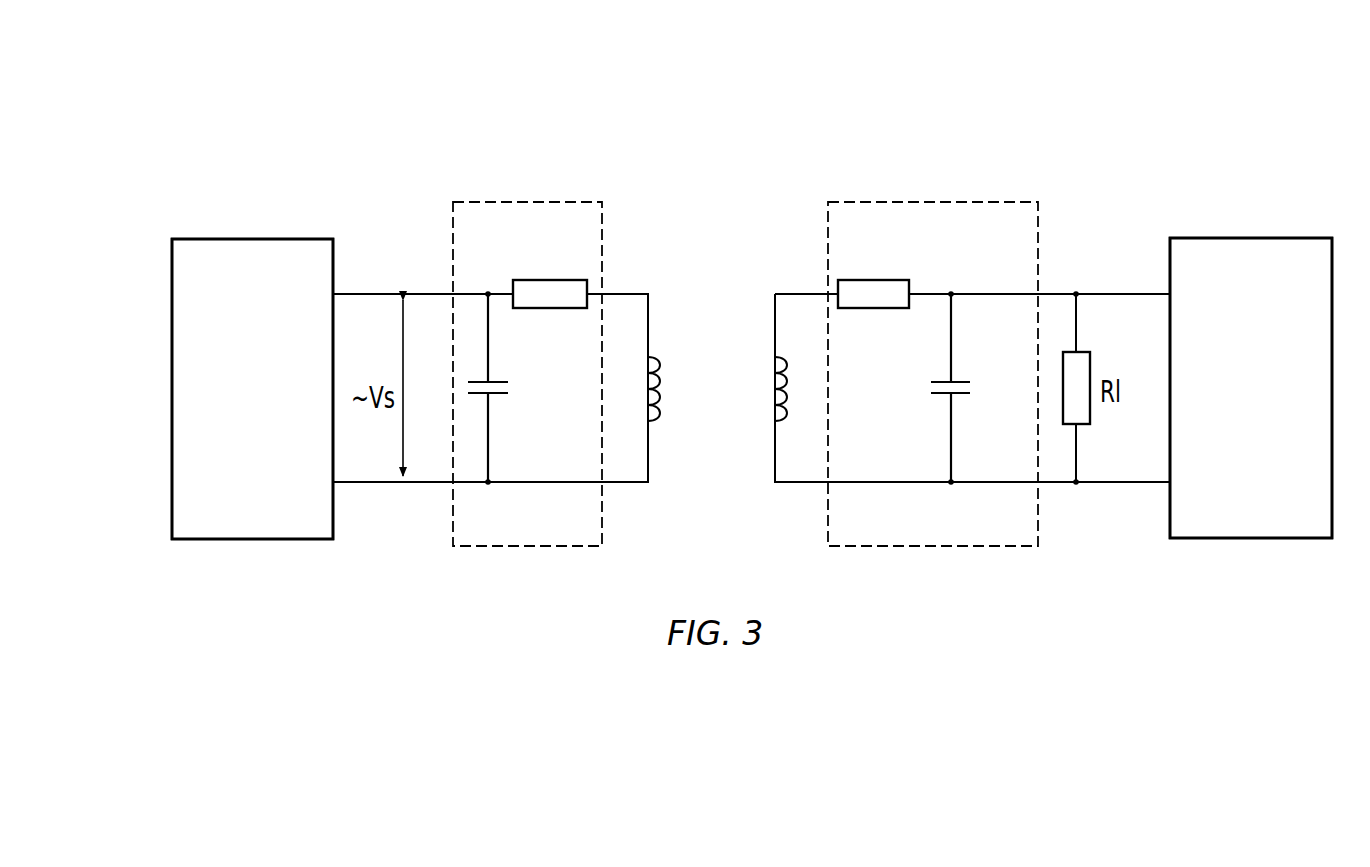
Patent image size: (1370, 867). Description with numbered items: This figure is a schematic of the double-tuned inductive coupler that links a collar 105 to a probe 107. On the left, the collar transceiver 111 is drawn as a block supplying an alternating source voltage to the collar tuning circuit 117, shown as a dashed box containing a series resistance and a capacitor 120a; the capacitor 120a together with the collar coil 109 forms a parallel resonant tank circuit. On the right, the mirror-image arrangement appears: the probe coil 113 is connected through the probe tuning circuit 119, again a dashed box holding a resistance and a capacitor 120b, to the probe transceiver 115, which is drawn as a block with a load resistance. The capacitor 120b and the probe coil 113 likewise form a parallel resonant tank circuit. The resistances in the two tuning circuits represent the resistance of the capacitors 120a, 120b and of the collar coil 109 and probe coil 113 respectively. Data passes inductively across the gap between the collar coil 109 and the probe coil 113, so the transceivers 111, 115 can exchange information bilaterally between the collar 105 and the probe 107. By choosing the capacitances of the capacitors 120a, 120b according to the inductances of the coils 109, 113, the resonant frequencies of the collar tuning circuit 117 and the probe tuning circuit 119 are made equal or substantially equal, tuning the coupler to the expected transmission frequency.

The collar 105 is at (345, 136).
The probe 107 is at (1214, 141).
The collar coil 109 is at (656, 356).
The collar transceiver 111 is at (233, 238).
The probe coil 113 is at (775, 410).
The probe transceiver 115 is at (1225, 237).
The collar tuning circuit 117 is at (541, 201).
The probe tuning circuit 119 is at (945, 201).
The capacitor 120a is at (500, 381).
The capacitor 120b is at (958, 381).